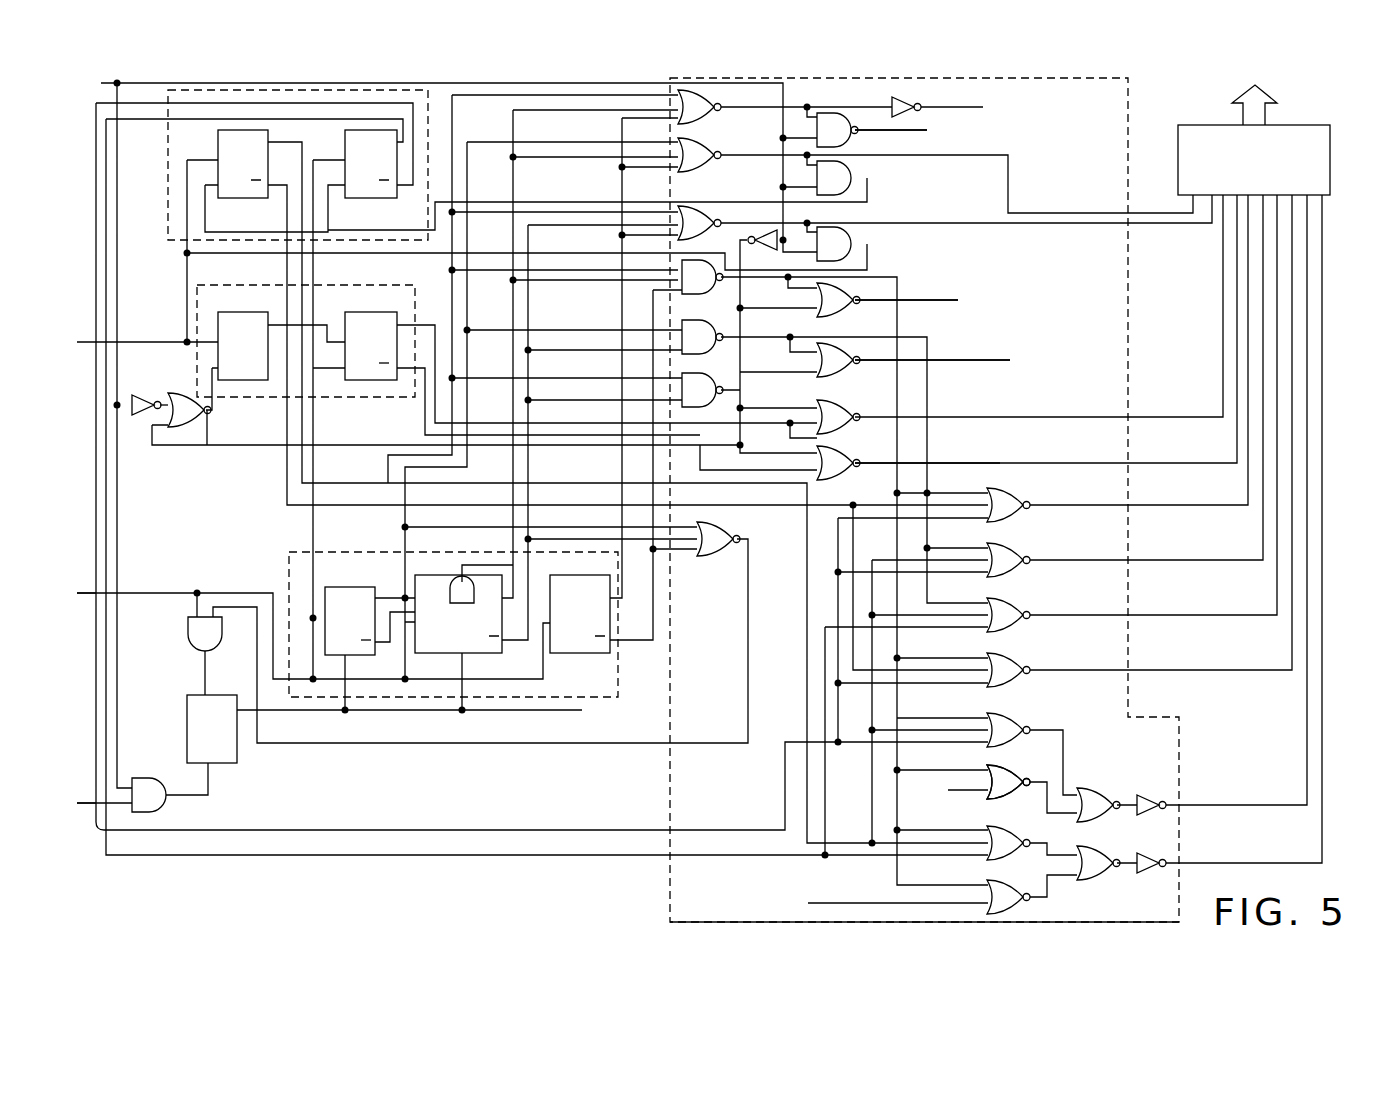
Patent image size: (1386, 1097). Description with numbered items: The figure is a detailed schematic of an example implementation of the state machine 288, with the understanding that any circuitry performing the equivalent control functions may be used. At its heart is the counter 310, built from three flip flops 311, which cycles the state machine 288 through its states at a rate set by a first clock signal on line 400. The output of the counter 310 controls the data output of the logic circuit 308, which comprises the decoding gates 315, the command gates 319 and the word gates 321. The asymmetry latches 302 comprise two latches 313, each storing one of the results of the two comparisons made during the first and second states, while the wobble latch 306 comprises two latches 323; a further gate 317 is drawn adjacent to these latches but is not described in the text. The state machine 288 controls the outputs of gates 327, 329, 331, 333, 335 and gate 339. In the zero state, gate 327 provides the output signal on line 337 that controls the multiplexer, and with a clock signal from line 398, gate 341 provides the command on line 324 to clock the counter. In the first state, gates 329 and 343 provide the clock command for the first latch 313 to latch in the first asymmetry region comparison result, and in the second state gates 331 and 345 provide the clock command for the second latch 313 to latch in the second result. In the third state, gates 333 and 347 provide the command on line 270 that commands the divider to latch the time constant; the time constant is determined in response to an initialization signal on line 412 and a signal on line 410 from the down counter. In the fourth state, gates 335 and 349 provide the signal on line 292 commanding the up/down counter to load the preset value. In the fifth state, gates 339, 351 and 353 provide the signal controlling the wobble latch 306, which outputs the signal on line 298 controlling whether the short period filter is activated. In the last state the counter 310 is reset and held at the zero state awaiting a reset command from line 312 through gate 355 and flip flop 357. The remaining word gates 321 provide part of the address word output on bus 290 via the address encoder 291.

The line 270 is at (940, 300).
The state machine 288 is at (303, 872).
The bus 290 is at (1265, 113).
The address encoder 291 is at (1323, 172).
The line 292 is at (985, 360).
The line 298 is at (960, 448).
The asymmetry latches 302 is at (168, 222).
The wobble latch 306 is at (300, 297).
The logic circuit 308 is at (672, 868).
The counter 310 is at (605, 705).
The flip flops 311 is at (358, 585).
The line 312 is at (77, 805).
The latches 313 is at (185, 135).
The decoding gates 315 is at (745, 523).
The NOR gate 317 is at (128, 342).
The command gates 319 is at (1068, 162).
The word gates 321 is at (1052, 527).
The latches 323 is at (275, 308).
The line 324 is at (890, 131).
The gate 327 is at (700, 120).
The gate 329 is at (700, 170).
The gate 331 is at (690, 212).
The gate 333 is at (695, 290).
The gate 335 is at (705, 350).
The line 337 is at (983, 107).
The gate 339 is at (682, 385).
The gate 341 is at (820, 117).
The gate 343 is at (850, 166).
The gate 345 is at (850, 236).
The gate 347 is at (830, 312).
The gate 349 is at (836, 372).
The gate 351 is at (845, 407).
The gate 353 is at (830, 480).
The gate 355 is at (152, 793).
The flip flop 357 is at (228, 765).
The line 398 is at (495, 83).
The line 400 is at (152, 592).
The line 410 is at (866, 902).
The line 412 is at (980, 792).